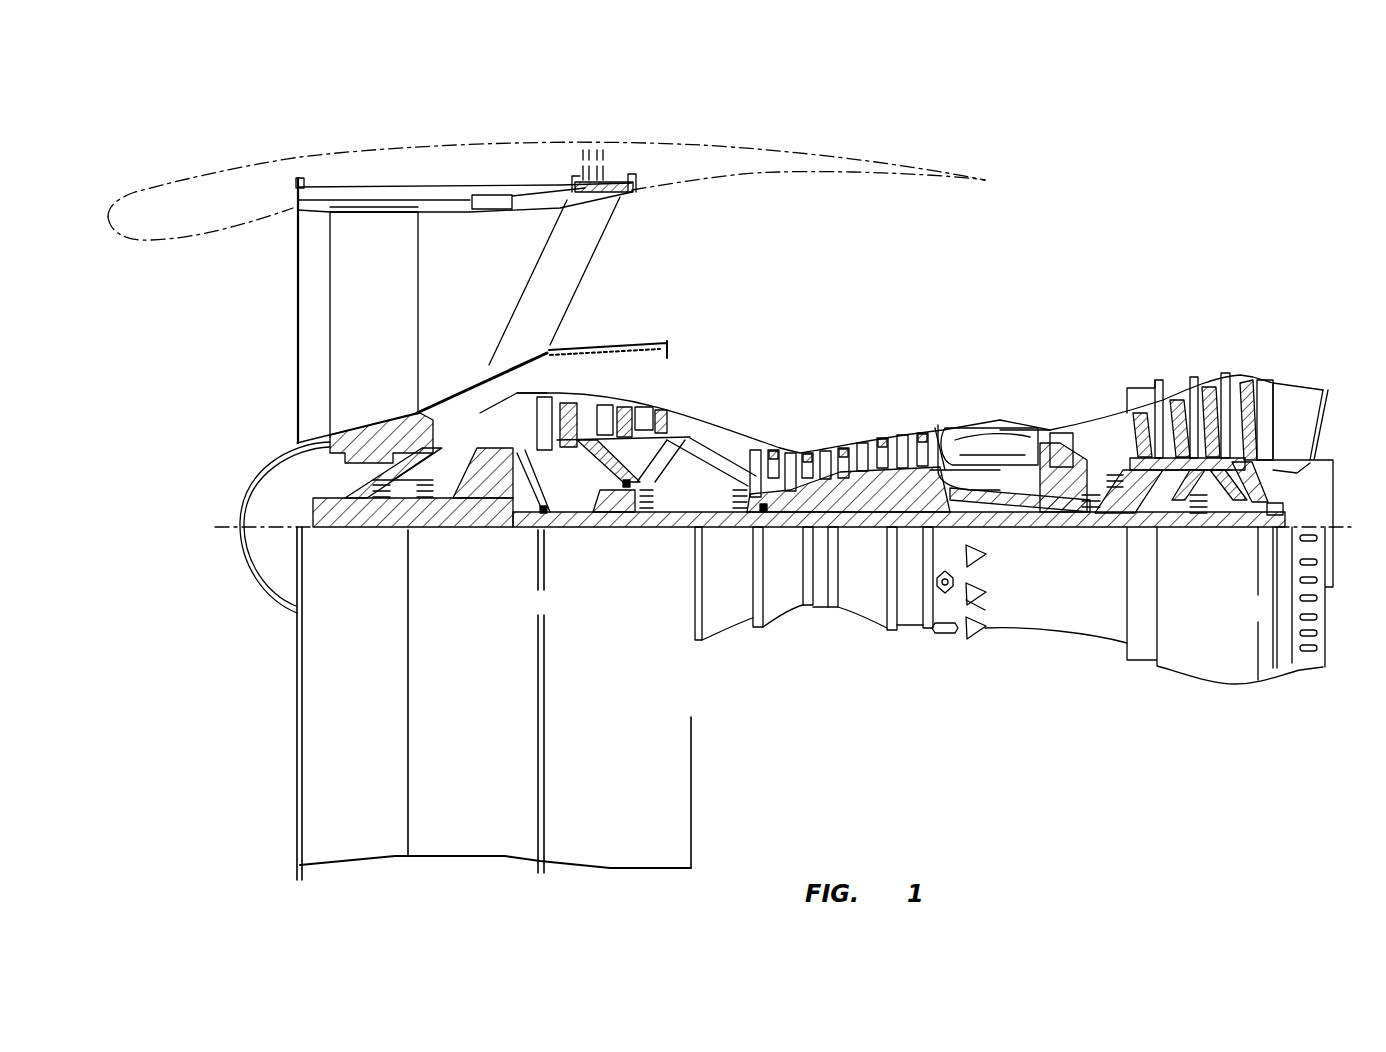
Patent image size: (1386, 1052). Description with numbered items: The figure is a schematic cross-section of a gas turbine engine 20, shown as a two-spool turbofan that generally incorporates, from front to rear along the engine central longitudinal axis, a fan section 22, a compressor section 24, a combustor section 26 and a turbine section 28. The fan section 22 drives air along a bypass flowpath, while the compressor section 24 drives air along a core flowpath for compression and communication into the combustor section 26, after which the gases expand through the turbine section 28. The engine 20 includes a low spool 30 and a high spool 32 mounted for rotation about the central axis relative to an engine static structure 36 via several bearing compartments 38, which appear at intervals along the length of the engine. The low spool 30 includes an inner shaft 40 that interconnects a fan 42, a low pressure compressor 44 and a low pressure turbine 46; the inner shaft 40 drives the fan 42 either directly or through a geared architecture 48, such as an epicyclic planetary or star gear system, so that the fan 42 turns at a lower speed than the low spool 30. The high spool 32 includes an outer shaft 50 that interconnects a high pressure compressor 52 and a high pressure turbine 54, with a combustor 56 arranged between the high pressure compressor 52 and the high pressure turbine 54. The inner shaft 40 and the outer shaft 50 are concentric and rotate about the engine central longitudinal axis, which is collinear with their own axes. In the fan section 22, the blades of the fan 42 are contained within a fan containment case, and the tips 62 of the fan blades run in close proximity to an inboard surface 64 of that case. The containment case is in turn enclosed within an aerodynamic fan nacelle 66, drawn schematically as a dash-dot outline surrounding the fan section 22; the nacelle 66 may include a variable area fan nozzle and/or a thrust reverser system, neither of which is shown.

The gas turbine engine 20 is at (1098, 236).
The fan section 22 is at (540, 130).
The compressor section 24 is at (553, 305).
The combustor section 26 is at (935, 295).
The turbine section 28 is at (1265, 306).
The low spool 30 is at (865, 537).
The high spool 32 is at (911, 480).
The engine static structure 36 is at (912, 630).
The bearing compartments 38 is at (1052, 386).
The inner shaft 40 is at (717, 527).
The fan 42 is at (374, 324).
The low pressure compressor 44 is at (626, 402).
The low pressure turbine 46 is at (1198, 378).
The geared architecture 48 is at (497, 527).
The outer shaft 50 is at (990, 503).
The high pressure compressor 52 is at (843, 473).
The high pressure turbine 54 is at (1058, 427).
The combustor 56 is at (992, 450).
The tips 62 is at (373, 222).
The inboard surface 64 is at (443, 213).
The fan nacelle 66 is at (815, 153).